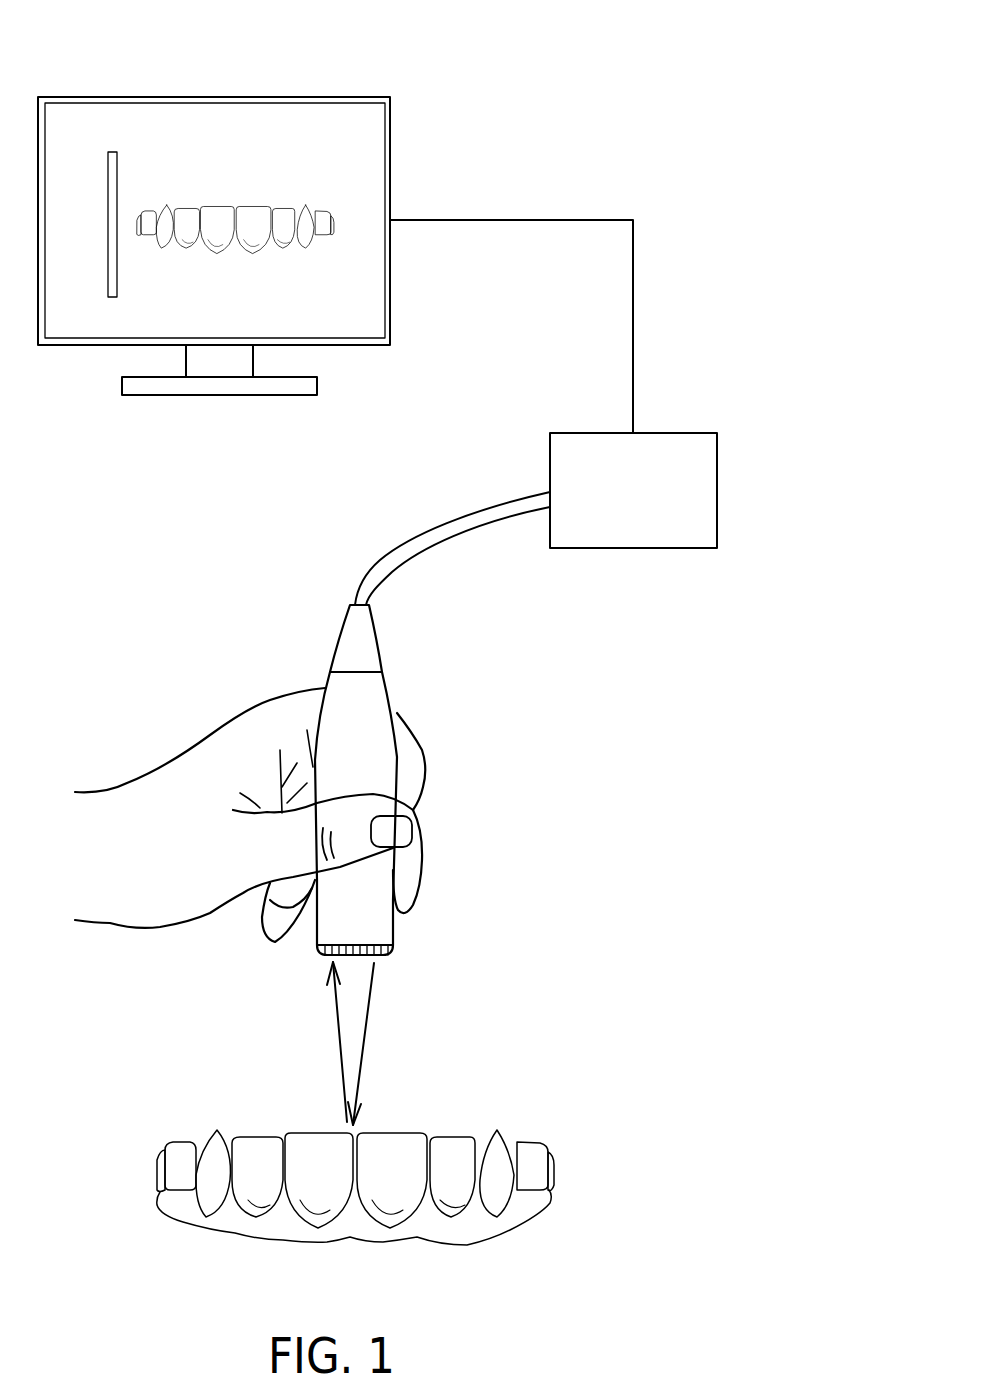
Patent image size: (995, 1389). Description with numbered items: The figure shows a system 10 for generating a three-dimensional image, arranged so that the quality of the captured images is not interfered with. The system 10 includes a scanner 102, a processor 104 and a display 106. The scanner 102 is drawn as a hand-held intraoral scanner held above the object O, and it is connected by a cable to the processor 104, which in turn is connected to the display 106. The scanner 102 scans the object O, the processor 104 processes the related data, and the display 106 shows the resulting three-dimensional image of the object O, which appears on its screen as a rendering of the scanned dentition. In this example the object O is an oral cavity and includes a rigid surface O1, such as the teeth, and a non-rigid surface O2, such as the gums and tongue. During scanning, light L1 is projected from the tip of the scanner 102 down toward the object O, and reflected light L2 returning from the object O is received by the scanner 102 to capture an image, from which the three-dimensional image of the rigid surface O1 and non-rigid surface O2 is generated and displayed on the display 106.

The system 10 is at (658, 53).
The scanner 102 is at (377, 705).
The processor 104 is at (680, 432).
The display 106 is at (352, 97).
The light L1 is at (375, 1044).
The reflected light L2 is at (323, 1042).
The object O is at (429, 1187).
The rigid surface O1 is at (523, 1167).
The non-rigid surface O2 is at (527, 1213).